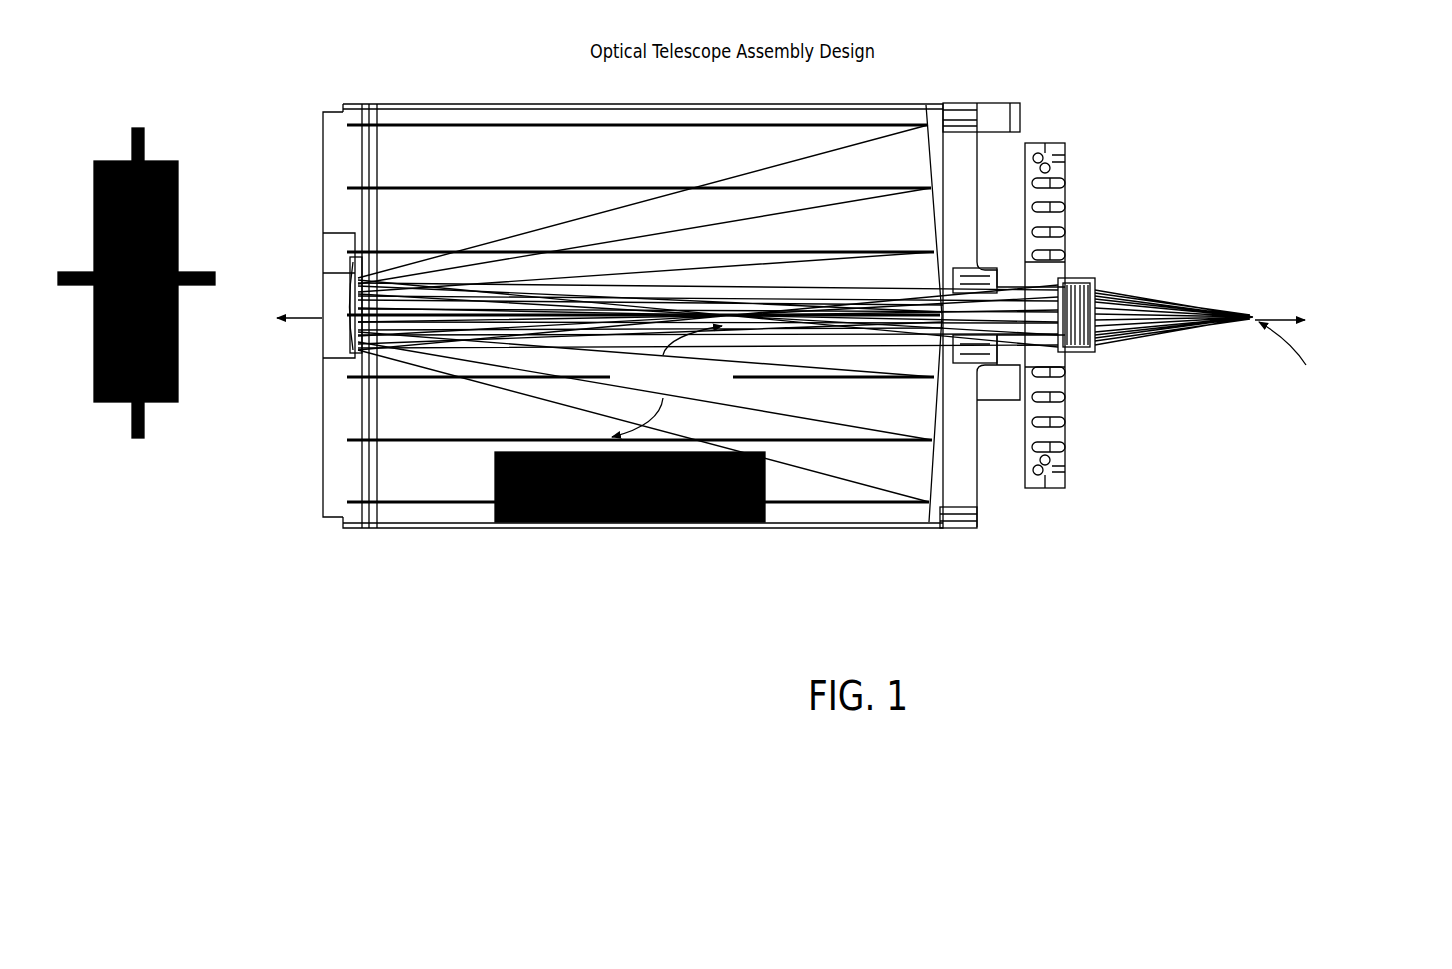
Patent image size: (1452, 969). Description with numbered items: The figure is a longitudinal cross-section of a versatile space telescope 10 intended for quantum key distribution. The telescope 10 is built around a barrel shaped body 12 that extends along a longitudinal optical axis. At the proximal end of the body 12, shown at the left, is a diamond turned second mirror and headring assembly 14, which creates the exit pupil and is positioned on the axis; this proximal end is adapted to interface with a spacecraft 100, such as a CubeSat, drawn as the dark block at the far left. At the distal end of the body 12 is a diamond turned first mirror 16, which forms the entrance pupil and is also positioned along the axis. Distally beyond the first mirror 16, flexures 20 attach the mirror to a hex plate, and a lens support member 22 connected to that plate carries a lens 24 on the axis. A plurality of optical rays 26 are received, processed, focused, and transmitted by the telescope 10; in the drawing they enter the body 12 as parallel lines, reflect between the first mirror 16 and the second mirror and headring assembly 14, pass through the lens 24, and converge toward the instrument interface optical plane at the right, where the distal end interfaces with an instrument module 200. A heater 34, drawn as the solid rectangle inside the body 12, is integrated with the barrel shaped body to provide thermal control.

The versatile space telescope 10 is at (301, 194).
The spacecraft 100 is at (187, 266).
The barrel shaped body 12 is at (817, 539).
The second mirror and headring assembly 14 is at (335, 331).
The first mirror 16 is at (961, 463).
The heater 34 is at (624, 539).
The flexures 20 is at (1063, 188).
The lens 24 is at (1094, 308).
The lens support member 22 is at (1086, 352).
The optical rays 26 is at (1202, 291).
The instrument module 200 is at (1373, 282).